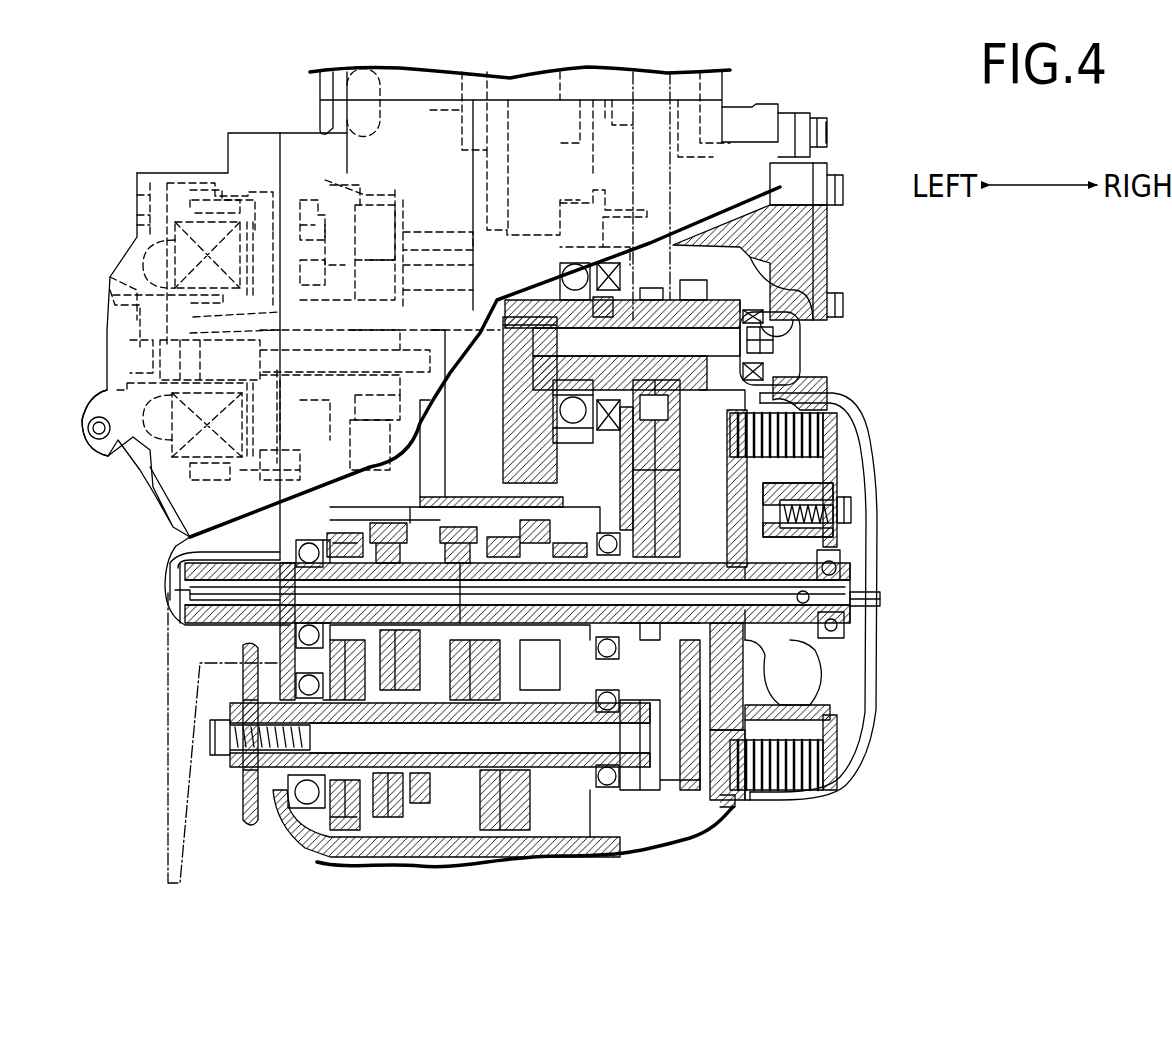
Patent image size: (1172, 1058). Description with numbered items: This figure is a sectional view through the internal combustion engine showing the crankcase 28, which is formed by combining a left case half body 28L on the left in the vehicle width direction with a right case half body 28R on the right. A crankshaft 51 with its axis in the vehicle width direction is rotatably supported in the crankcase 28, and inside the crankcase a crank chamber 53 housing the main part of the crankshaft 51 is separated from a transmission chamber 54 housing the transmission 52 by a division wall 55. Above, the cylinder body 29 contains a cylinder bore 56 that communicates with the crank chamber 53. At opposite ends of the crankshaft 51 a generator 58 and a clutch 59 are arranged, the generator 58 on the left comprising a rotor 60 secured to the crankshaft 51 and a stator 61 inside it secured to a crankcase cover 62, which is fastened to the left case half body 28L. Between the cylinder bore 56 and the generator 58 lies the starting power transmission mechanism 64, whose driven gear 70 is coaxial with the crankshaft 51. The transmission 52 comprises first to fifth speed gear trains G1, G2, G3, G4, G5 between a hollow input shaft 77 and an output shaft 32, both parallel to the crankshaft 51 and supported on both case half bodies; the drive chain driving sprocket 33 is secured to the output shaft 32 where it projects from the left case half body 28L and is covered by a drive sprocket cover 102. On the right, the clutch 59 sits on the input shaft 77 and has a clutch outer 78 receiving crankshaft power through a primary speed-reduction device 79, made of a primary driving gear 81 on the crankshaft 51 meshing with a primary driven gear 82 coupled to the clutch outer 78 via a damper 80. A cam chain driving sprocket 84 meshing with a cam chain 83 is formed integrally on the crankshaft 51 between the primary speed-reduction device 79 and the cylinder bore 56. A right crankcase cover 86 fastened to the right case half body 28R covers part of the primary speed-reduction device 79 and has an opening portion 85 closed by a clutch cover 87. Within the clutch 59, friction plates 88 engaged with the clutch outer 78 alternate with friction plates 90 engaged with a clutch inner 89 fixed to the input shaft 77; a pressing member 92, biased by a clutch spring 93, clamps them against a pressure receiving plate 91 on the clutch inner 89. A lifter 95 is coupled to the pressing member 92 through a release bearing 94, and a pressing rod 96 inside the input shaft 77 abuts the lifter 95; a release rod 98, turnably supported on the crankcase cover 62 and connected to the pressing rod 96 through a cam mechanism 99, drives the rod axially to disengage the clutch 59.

The crankcase 28 is at (545, 908).
The left case half body 28L is at (427, 860).
The right case half body 28R is at (470, 853).
The cylinder body 29 is at (708, 84).
The output shaft 32 is at (540, 760).
The drive chain driving sprocket 33 is at (252, 825).
The crankshaft 51 is at (505, 393).
The transmission 52 is at (557, 863).
The crank chamber 53 is at (463, 376).
The transmission chamber 54 is at (365, 840).
The division wall 55 is at (483, 503).
The cylinder bore 56 is at (340, 92).
The generator 58 is at (205, 489).
The clutch 59 is at (868, 432).
The rotor 60 is at (215, 190).
The stator 61 is at (173, 437).
The crankcase cover 62 is at (110, 275).
The starting power transmission mechanism 64 is at (333, 236).
The driven gear 70 is at (358, 190).
The input shaft 77 is at (290, 627).
The clutch outer 78 is at (762, 392).
The primary speed-reduction device 79 is at (813, 218).
The damper 80 is at (693, 503).
The primary driving gear 81 is at (693, 282).
The primary driven gear 82 is at (693, 780).
The cam chain 83 is at (630, 125).
The cam chain driving sprocket 84 is at (653, 288).
The opening portion 85 is at (790, 410).
The right crankcase cover 86 is at (803, 243).
The clutch cover 87 is at (880, 607).
The friction plates 88 is at (808, 790).
The clutch inner 89 is at (837, 698).
The friction plates 90 is at (845, 510).
The pressure receiving plate 91 is at (733, 807).
The pressing member 92 is at (843, 457).
The clutch spring 93 is at (817, 550).
The release bearing 94 is at (838, 623).
The lifter 95 is at (833, 673).
The pressing rod 96 is at (652, 628).
The release rod 98 is at (172, 574).
The cam mechanism 99 is at (168, 596).
The drive sprocket cover 102 is at (167, 720).
The first speed gear train G1 is at (574, 538).
The second speed gear train G2 is at (350, 530).
The third speed gear train G3 is at (448, 522).
The fourth speed gear train G4 is at (392, 511).
The fifth speed gear train G5 is at (520, 515).